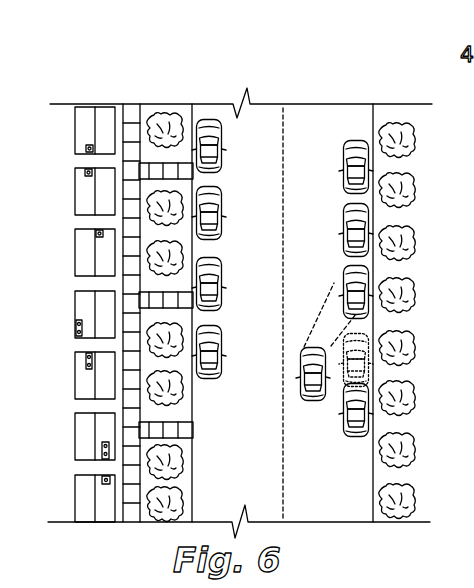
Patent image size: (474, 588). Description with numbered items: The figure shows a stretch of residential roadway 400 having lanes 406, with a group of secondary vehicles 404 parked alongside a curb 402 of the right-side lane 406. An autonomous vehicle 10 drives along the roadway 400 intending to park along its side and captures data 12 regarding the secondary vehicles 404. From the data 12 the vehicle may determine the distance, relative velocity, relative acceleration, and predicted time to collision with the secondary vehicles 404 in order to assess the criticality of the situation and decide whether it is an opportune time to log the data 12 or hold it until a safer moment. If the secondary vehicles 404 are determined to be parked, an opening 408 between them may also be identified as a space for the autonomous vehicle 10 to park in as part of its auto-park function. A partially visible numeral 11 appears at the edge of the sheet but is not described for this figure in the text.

The residential roadway 400 is at (137, 85).
The curb 402 is at (373, 112).
The secondary vehicles 404 is at (376, 220).
The lanes 406 is at (316, 113).
The opening 408 is at (380, 327).
The autonomous vehicle 10 is at (336, 383).
The data 12 is at (330, 292).
The roadside trees 11 is at (426, 321).